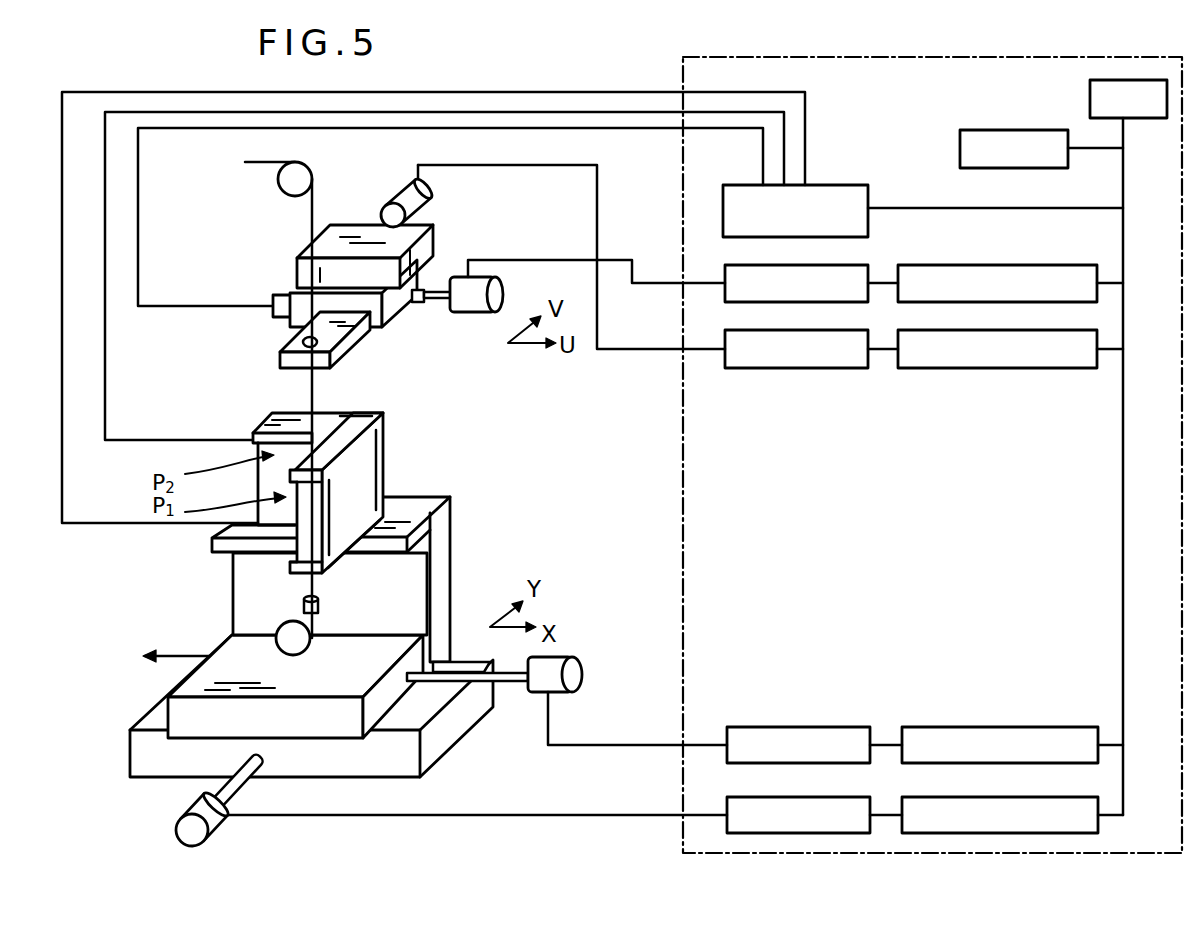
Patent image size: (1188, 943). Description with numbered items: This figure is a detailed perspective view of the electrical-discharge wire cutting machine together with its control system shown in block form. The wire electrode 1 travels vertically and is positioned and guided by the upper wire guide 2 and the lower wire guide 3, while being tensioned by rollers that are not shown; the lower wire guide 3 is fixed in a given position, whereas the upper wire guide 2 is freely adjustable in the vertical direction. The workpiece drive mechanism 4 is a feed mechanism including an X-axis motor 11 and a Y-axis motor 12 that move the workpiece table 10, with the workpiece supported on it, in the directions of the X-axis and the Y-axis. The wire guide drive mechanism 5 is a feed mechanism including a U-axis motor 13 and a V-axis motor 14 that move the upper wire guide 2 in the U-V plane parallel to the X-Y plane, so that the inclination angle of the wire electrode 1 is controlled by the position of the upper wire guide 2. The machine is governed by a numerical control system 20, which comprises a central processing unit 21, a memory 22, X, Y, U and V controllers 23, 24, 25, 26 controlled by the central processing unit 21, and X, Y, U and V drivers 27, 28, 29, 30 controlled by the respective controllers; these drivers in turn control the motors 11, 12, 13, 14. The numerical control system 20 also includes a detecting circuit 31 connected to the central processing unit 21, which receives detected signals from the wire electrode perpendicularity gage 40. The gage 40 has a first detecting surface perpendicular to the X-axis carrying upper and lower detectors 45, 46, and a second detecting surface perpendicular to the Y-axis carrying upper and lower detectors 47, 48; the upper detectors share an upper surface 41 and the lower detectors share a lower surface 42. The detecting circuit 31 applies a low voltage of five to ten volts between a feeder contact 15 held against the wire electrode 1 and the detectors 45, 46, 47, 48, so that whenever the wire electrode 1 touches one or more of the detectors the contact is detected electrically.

The wire electrode 1 is at (311, 384).
The upper wire guide 2 is at (305, 342).
The lower wire guide 3 is at (300, 603).
The workpiece drive mechanism 4 is at (472, 602).
The wire guide drive mechanism 5 is at (398, 331).
The workpiece table 10 is at (452, 497).
The X-axis motor 11 is at (560, 657).
The Y-axis motor 12 is at (192, 798).
The U-axis motor 13 is at (468, 312).
The V-axis motor 14 is at (397, 200).
The feeder contact 15 is at (275, 296).
The numerical control system 20 is at (681, 72).
The central processing unit 21 is at (1090, 100).
The memory 22 is at (960, 157).
The X controller 23 is at (1000, 727).
The Y controller 24 is at (1100, 825).
The U controller 25 is at (960, 368).
The V controller 26 is at (960, 265).
The X driver 27 is at (797, 727).
The Y driver 28 is at (745, 797).
The U driver 29 is at (742, 330).
The V driver 30 is at (742, 265).
The detecting circuit 31 is at (752, 185).
The wire electrode perpendicularity gage 40 is at (395, 452).
The upper surface 41 is at (357, 408).
The lower surface 42 is at (352, 560).
The upper detector 45 is at (290, 475).
The lower detector 46 is at (292, 563).
The upper detector 47 is at (257, 452).
The lower detector 48 is at (262, 540).